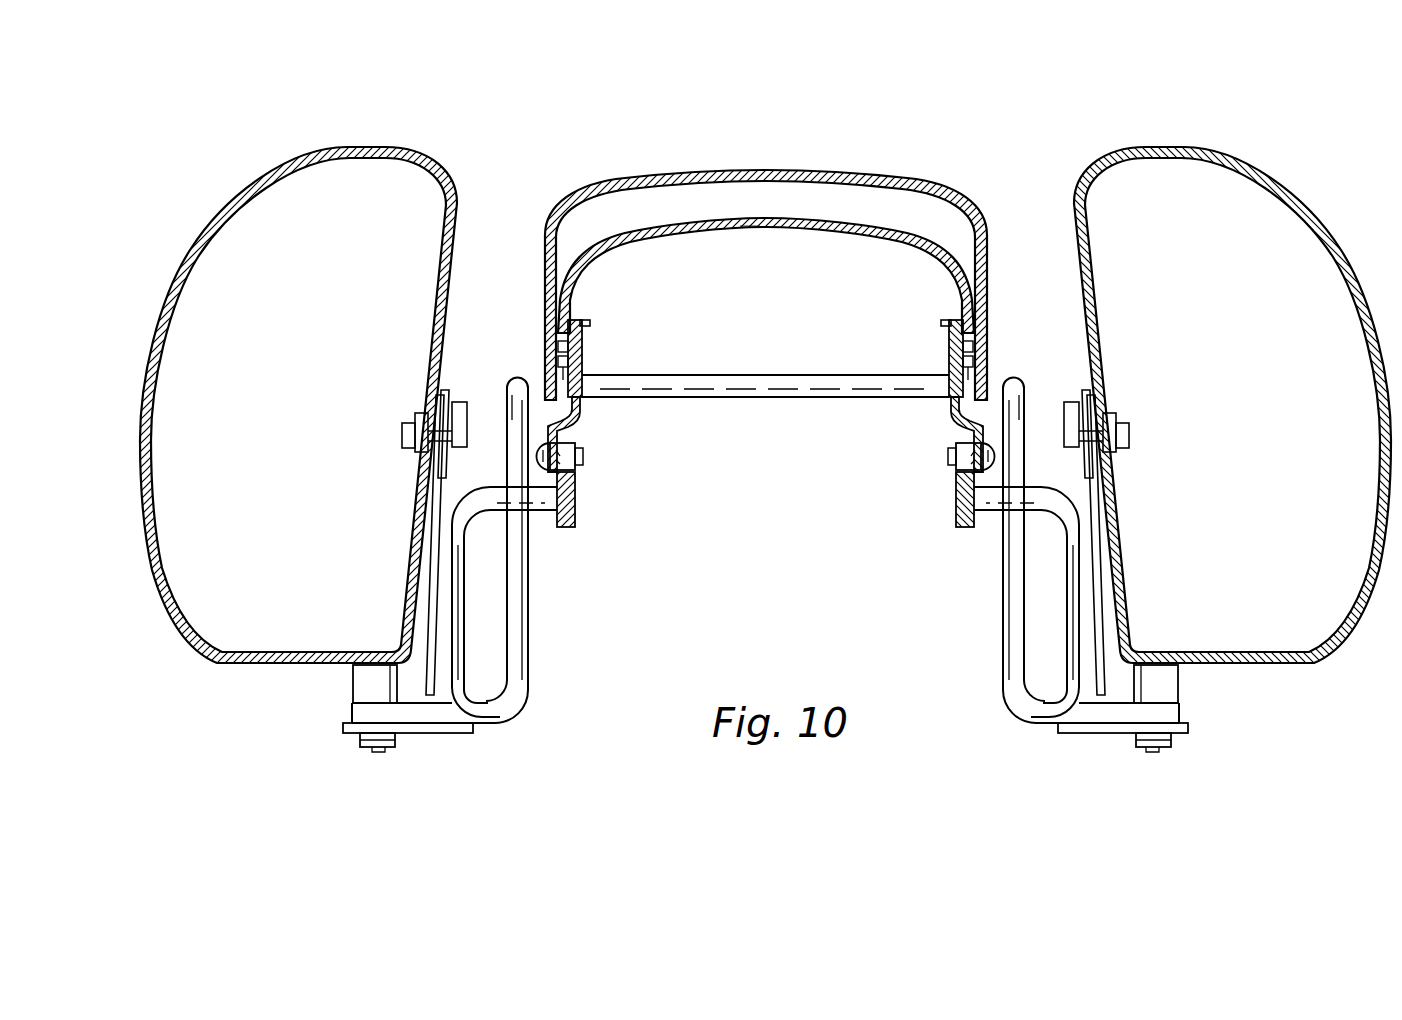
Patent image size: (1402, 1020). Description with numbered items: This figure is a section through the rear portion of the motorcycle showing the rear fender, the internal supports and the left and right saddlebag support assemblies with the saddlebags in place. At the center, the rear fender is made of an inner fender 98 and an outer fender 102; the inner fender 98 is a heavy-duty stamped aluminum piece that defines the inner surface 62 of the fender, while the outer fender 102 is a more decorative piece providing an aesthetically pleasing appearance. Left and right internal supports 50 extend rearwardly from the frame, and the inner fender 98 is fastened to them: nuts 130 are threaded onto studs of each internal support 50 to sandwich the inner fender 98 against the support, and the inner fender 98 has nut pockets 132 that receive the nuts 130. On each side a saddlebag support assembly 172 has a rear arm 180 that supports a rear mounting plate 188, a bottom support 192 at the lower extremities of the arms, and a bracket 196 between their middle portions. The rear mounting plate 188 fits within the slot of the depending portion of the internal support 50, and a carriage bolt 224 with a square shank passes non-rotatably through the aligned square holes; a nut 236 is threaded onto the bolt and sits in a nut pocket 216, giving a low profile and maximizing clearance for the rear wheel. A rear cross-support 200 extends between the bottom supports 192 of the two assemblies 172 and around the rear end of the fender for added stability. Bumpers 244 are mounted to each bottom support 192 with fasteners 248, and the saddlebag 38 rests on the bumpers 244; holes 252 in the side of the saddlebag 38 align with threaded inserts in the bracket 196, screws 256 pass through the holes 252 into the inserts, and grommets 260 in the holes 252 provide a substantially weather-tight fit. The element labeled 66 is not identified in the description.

The saddlebag 38 is at (378, 147).
The canopy frame 66 is at (567, 211).
The outer fender 102 is at (800, 172).
The inner fender 98 is at (827, 230).
The inner surface 62 is at (737, 224).
The nut pocket 132 is at (550, 302).
The nut 130 is at (543, 312).
The internal support 50 is at (582, 378).
The rear cross-support 200 is at (771, 377).
The hole 252 is at (440, 395).
The bracket 196 is at (448, 405).
The grommet 260 is at (420, 418).
The screw 256 is at (402, 432).
The nut 236 is at (583, 438).
The carriage bolt 224 is at (585, 460).
The nut pocket 216 is at (578, 477).
The rear mounting plate 188 is at (580, 518).
The saddlebag support assembly 172 is at (584, 571).
The rear arm 180 is at (460, 625).
The bumper 244 is at (360, 687).
The fastener 248 is at (375, 745).
The bottom support 192 is at (433, 725).